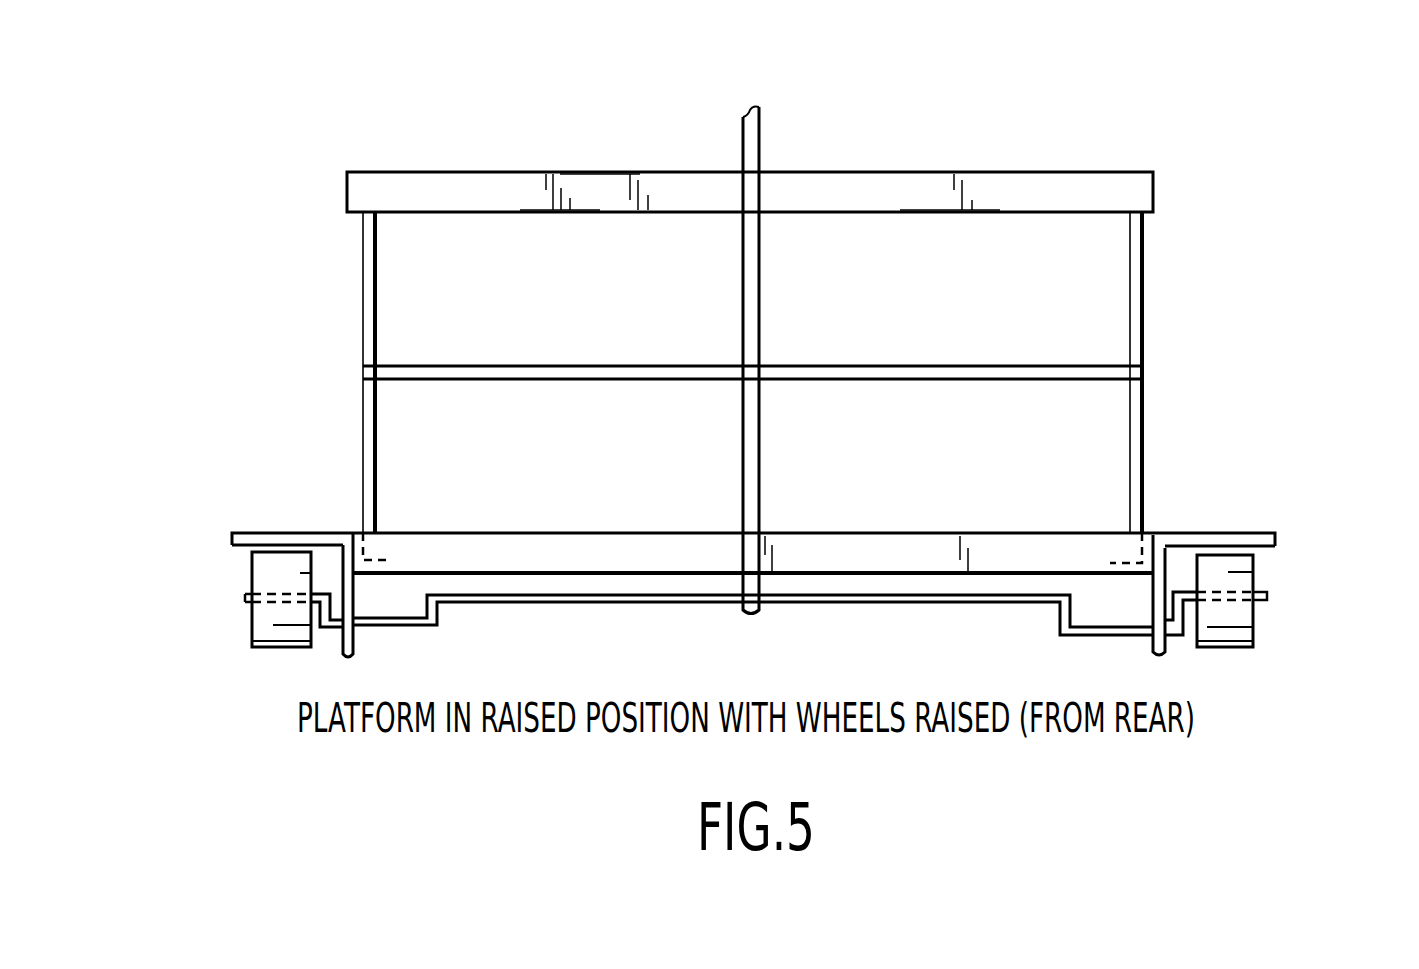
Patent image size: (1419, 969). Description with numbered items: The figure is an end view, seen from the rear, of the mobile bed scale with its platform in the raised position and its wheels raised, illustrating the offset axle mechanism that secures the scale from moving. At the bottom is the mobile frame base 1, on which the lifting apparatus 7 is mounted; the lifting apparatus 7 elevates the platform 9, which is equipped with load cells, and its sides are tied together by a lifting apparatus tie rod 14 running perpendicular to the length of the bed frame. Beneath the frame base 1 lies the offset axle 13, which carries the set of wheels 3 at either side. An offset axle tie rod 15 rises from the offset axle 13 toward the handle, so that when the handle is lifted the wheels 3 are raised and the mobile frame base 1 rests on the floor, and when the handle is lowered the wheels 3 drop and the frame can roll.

The mobile frame base 1 is at (1207, 531).
The wheels 3 is at (246, 632).
The lifting apparatus 7 is at (384, 342).
The platform 9 is at (1175, 197).
The offset axle 13 is at (682, 606).
The lifting apparatus tie rod 14 is at (908, 365).
The offset axle tie rod 15 is at (764, 451).